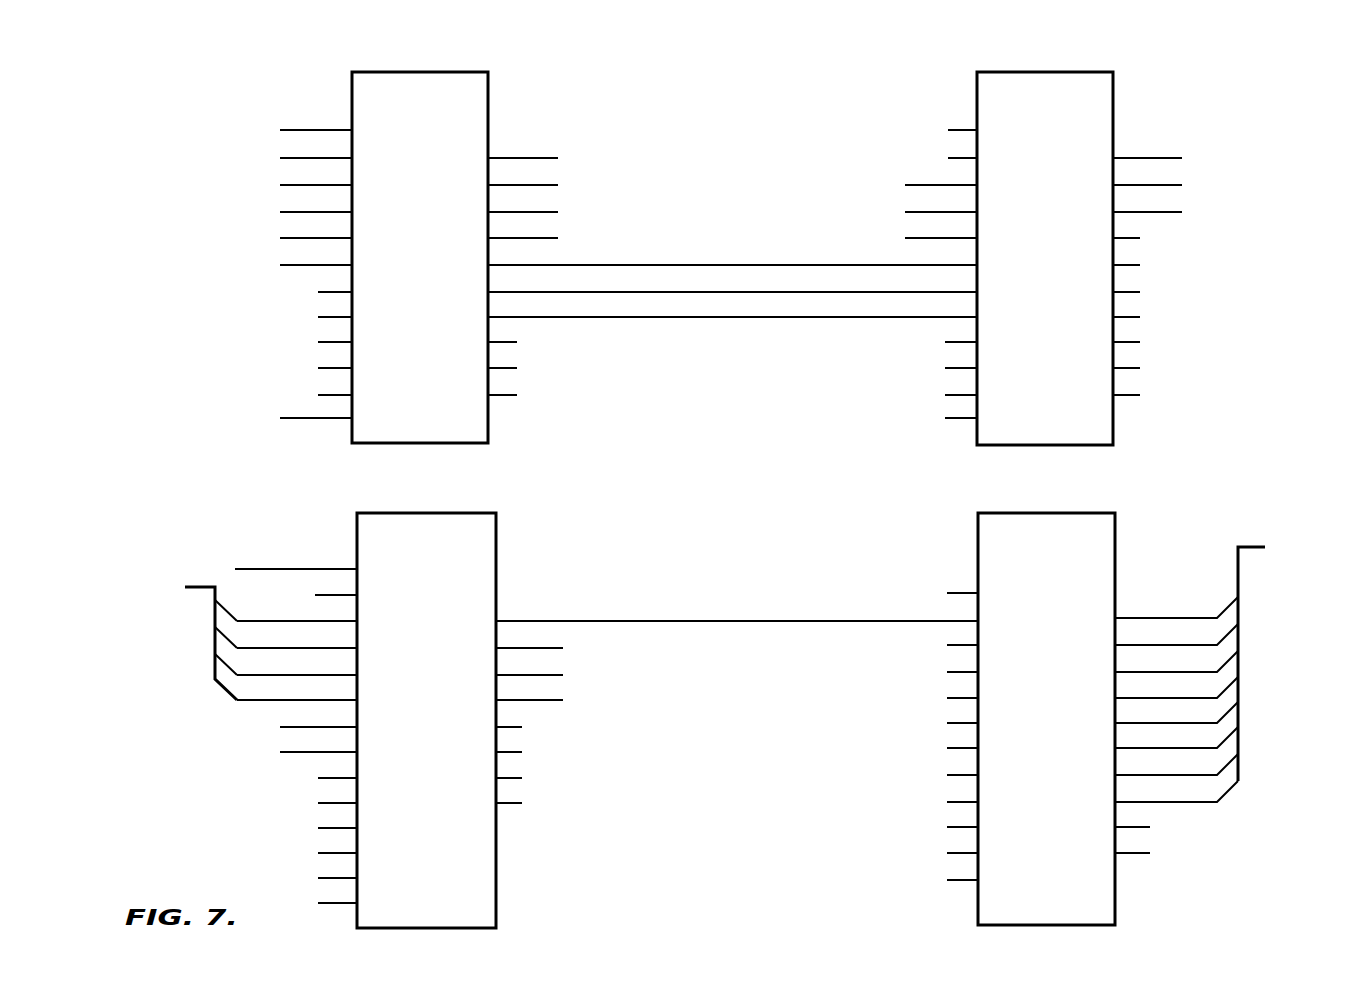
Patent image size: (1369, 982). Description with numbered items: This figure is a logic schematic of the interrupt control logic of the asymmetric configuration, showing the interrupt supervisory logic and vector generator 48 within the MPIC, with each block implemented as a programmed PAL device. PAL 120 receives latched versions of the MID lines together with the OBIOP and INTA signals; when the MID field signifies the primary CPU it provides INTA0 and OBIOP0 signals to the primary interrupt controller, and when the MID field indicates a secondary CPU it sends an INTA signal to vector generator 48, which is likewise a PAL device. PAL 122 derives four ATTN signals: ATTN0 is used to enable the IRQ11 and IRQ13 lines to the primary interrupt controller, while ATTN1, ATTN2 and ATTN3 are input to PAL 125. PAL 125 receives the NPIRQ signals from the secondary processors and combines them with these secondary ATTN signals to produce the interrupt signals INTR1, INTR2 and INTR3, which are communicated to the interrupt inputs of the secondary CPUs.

The PAL 122 is at (488, 423).
The PAL 125 is at (1113, 423).
The PAL 120 is at (496, 537).
The vector generator 48 is at (1115, 531).